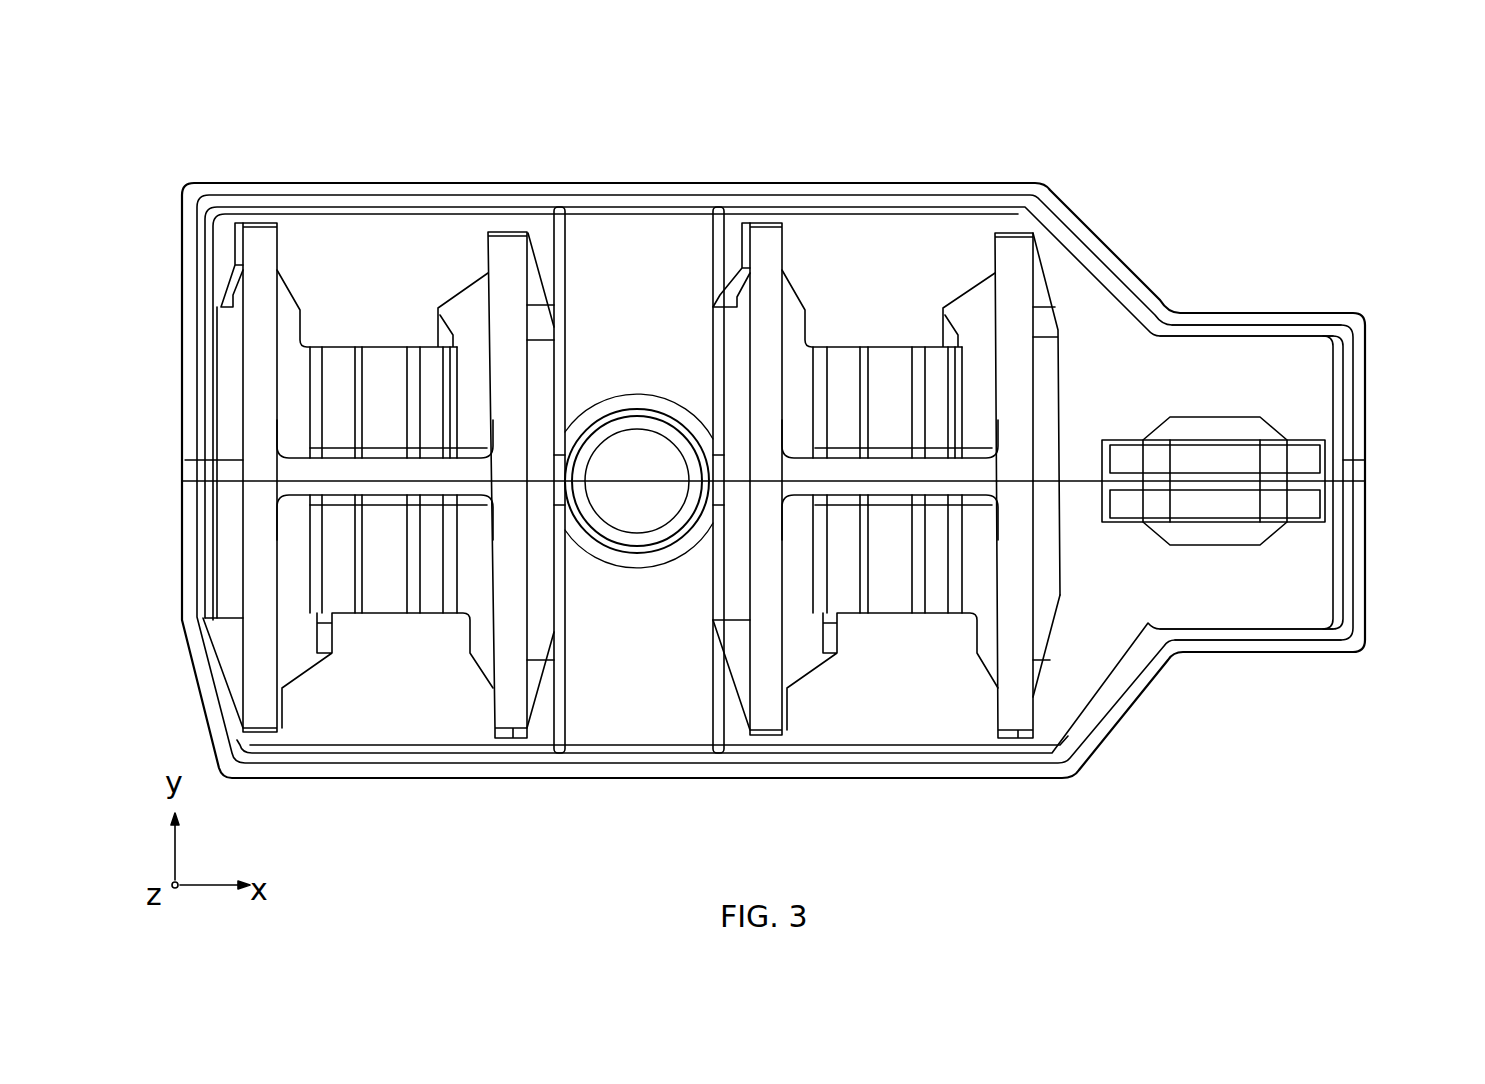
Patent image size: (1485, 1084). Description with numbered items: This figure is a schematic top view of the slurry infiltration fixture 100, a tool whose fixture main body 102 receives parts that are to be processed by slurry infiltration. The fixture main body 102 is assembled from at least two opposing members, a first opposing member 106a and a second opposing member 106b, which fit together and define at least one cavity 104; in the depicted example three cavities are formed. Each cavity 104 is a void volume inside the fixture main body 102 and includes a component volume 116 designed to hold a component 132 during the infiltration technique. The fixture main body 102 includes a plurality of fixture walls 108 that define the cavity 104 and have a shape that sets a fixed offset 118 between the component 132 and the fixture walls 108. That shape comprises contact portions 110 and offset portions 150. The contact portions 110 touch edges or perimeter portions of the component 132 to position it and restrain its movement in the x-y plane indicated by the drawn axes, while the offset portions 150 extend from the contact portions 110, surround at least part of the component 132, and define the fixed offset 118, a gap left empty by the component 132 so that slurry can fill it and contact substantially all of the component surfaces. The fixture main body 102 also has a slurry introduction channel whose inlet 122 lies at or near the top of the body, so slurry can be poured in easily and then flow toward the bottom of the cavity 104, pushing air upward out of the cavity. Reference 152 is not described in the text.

The slurry infiltration fixture 100 is at (193, 99).
The fixture main body 102 is at (1373, 322).
The cavity 104 is at (834, 443).
The first opposing member 106a is at (1367, 353).
The second opposing member 106b is at (1355, 602).
The fixture walls 108 is at (227, 293).
The contact portions 110 is at (305, 725).
The component volume 116 is at (1016, 658).
The fixed offset 118 is at (1046, 317).
The inlet 122 is at (637, 460).
The component 132 is at (1007, 280).
The offset portions 150 is at (230, 490).
The annular ring 152 is at (622, 423).